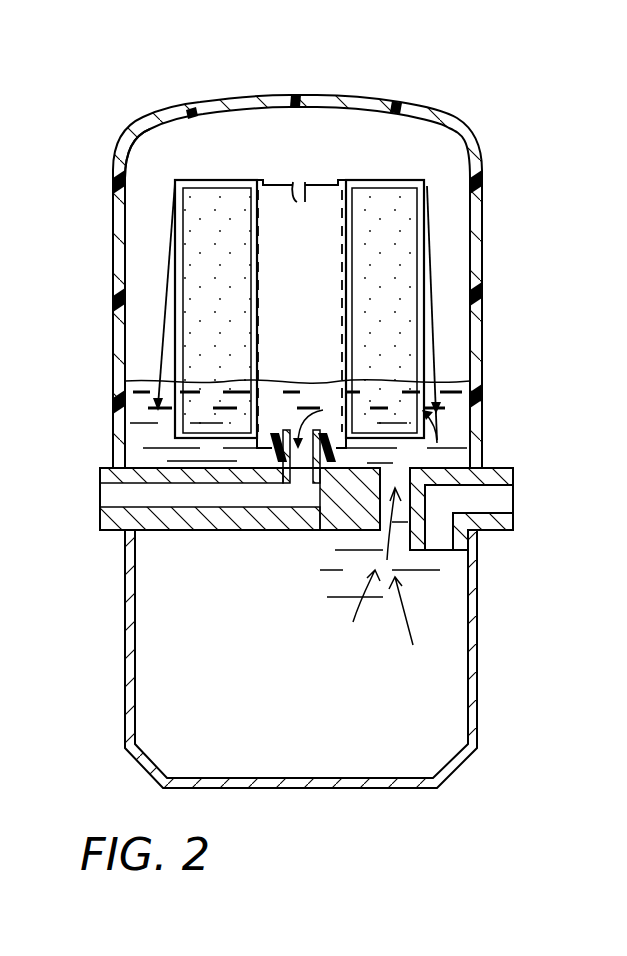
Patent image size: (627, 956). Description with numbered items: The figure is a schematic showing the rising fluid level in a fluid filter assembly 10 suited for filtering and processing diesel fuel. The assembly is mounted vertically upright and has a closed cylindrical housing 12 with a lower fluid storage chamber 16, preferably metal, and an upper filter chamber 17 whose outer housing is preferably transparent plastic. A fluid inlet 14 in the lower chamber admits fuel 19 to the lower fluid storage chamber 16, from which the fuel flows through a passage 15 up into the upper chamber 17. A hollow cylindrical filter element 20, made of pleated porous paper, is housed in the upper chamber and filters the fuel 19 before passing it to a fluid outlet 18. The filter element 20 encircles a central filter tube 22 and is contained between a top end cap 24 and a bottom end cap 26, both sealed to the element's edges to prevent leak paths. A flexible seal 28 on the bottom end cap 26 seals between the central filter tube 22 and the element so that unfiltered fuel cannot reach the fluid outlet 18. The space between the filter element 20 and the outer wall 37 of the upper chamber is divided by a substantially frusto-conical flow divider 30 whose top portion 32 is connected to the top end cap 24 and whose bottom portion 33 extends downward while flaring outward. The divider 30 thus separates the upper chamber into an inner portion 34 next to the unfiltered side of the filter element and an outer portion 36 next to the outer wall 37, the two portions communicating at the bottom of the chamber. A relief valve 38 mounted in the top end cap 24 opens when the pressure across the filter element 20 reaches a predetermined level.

The fluid filter assembly 10 is at (497, 113).
The housing 12 is at (473, 393).
The fluid inlet 14 is at (493, 513).
The passage 15 is at (398, 482).
The lower fluid storage chamber 16 is at (453, 672).
The upper filter chamber 17 is at (400, 128).
The fluid outlet 18 is at (130, 503).
The fuel 19 is at (462, 383).
The filter element 20 is at (400, 240).
The central filter tube 22 is at (270, 483).
The top end cap 24 is at (385, 183).
The bottom end cap 26 is at (245, 443).
The flexible seal 28 is at (268, 456).
The flow divider 30 is at (432, 272).
The top portion 32 is at (208, 180).
The bottom portion 33 is at (167, 227).
The inner portion 34 is at (173, 285).
The outer portion 36 is at (137, 307).
The outer wall 37 is at (130, 180).
The relief valve 38 is at (303, 200).